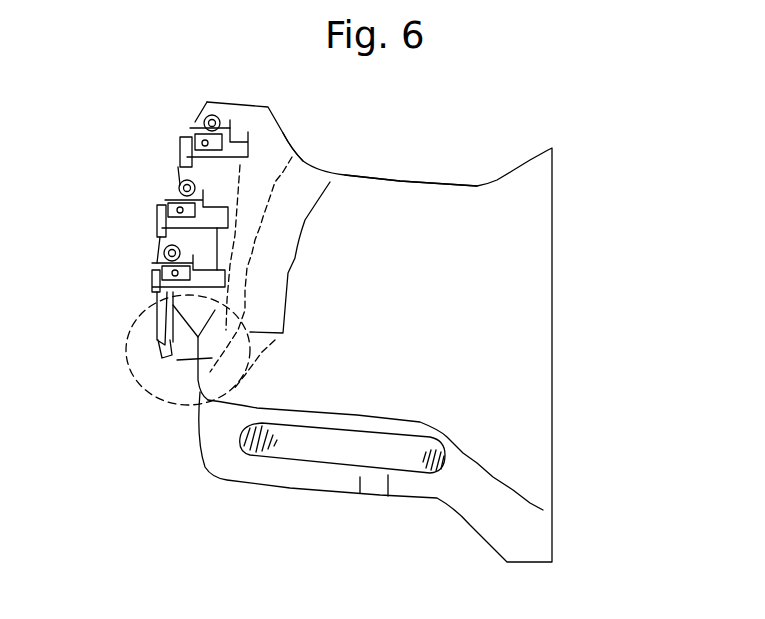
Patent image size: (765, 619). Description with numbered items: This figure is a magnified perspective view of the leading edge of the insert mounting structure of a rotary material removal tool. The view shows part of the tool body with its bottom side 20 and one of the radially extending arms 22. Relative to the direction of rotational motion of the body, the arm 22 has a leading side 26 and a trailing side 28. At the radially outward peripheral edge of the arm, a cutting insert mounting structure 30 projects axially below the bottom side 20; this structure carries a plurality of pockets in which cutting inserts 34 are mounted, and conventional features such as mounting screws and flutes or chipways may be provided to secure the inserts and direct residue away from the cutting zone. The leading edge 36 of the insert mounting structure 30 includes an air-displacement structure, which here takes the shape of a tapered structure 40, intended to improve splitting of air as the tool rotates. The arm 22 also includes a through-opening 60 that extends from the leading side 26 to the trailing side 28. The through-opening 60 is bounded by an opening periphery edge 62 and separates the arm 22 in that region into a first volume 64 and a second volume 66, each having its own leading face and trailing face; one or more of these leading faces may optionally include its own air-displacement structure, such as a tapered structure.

The bottom side 20 is at (552, 252).
The radially extending arm 22 is at (437, 319).
The leading side 26 is at (245, 458).
The trailing side 28 is at (410, 180).
The cutting insert mounting structure 30 is at (249, 194).
The cutting insert 34 is at (180, 138).
The leading edge 36 is at (130, 307).
The tapered structure 40 is at (148, 389).
The through-opening 60 is at (335, 448).
The opening periphery edge 62 is at (389, 498).
The first volume 64 is at (357, 492).
The second volume 66 is at (355, 415).